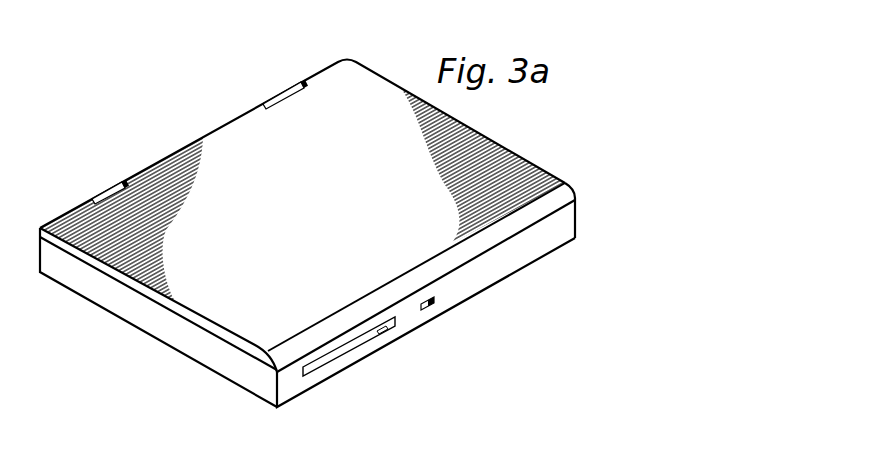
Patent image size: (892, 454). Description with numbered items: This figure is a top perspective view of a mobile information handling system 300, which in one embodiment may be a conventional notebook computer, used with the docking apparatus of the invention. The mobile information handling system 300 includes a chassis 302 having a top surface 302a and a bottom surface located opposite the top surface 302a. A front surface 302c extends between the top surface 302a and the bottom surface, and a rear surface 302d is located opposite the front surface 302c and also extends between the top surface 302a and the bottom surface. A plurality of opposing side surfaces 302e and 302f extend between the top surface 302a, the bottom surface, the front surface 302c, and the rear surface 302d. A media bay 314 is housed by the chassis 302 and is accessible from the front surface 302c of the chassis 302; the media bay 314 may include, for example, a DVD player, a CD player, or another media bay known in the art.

The mobile information handling system 300 is at (96, 61).
The chassis 302 is at (246, 105).
The top surface 302a is at (360, 72).
The front surface 302c is at (502, 262).
The rear surface 302d is at (197, 138).
The side surface 302e is at (148, 318).
The side surface 302f is at (499, 140).
The media bay 314 is at (346, 350).